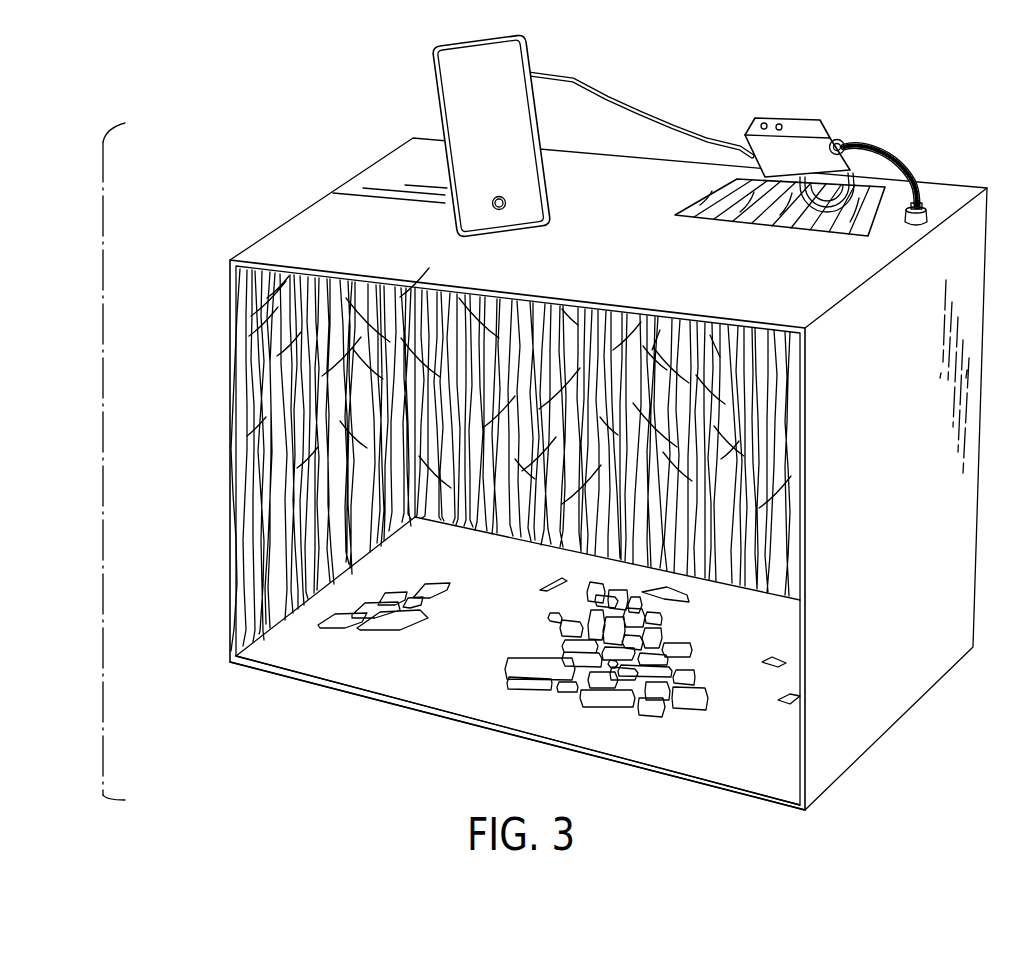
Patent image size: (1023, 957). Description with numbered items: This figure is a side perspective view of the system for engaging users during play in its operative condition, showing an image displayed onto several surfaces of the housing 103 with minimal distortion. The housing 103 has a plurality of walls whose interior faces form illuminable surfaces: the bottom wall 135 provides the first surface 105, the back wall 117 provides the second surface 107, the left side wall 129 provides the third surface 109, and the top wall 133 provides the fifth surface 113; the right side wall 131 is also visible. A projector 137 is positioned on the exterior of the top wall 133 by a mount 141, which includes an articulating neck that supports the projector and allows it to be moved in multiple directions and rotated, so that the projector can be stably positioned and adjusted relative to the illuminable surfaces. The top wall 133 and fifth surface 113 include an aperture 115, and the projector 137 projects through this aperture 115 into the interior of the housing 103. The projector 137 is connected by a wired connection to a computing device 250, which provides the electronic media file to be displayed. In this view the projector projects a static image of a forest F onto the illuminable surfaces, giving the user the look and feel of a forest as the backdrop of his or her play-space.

The housing 103 is at (103, 450).
The first surface 105 is at (515, 624).
The second surface 107 is at (602, 536).
The third surface 109 is at (315, 591).
The fifth surface 113 is at (693, 323).
The aperture 115 is at (697, 197).
The back wall 117 is at (532, 502).
The left side wall 129 is at (217, 438).
The right side wall 131 is at (910, 524).
The top wall 133 is at (597, 252).
The bottom wall 135 is at (378, 705).
The projector 137 is at (803, 123).
The mount 141 is at (892, 152).
The computing device 250 is at (503, 116).
The forest F is at (715, 557).